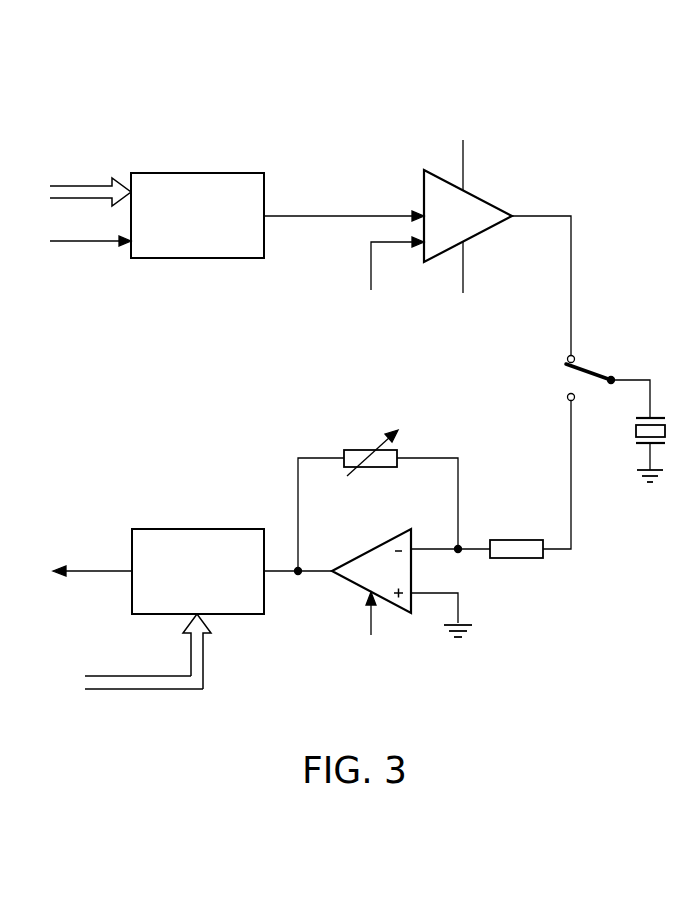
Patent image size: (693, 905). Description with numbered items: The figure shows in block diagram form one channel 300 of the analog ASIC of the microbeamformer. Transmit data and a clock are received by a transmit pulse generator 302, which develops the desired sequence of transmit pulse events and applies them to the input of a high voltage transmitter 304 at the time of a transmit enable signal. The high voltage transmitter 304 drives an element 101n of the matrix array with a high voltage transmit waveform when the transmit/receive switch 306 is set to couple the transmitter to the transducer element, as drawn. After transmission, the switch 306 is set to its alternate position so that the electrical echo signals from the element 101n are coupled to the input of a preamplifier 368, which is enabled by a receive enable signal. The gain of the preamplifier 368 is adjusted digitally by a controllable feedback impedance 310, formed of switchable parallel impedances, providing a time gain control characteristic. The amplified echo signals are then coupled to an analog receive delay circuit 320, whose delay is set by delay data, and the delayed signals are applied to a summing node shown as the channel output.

The channel 300 is at (104, 66).
The transmit pulse generator 302 is at (197, 172).
The high voltage transmitter 304 is at (490, 200).
The transmit/receive (T/R) switch 306 is at (600, 353).
The element of the matrix array 101n is at (635, 431).
The controllable feedback impedance 310 is at (357, 449).
The analog receive delay circuit 320 is at (196, 528).
The preamplifier 368 is at (360, 552).